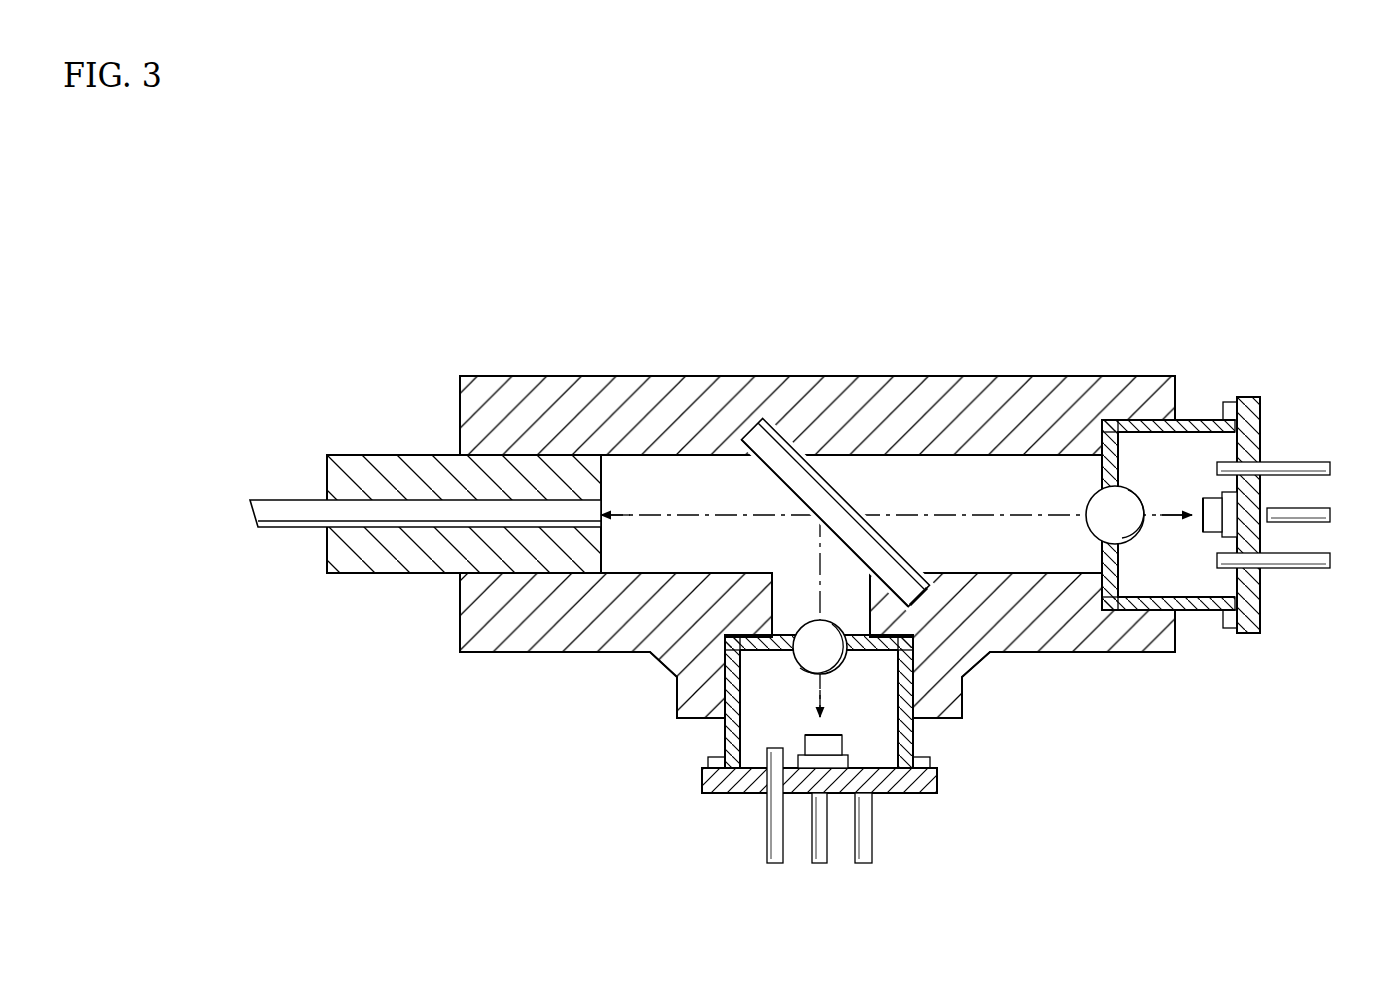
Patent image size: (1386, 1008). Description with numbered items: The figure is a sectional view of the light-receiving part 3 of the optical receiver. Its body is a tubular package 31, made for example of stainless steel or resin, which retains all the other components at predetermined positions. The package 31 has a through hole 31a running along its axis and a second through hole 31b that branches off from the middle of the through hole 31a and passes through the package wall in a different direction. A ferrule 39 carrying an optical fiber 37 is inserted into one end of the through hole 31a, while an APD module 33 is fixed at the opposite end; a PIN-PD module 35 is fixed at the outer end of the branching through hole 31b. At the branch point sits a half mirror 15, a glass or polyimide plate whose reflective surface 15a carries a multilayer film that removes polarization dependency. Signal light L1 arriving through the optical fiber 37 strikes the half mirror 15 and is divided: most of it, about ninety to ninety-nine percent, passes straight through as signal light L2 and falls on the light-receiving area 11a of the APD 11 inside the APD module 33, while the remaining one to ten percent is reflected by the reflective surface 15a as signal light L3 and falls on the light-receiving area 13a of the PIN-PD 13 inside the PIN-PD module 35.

The light-receiving part 3 is at (684, 268).
The package 31 is at (1020, 377).
The through hole 31a is at (656, 458).
The through hole 31b is at (787, 583).
The APD module 33 is at (1216, 454).
The PIN-PD module 35 is at (900, 741).
The optical fiber 37 is at (297, 527).
The ferrule 39 is at (392, 577).
The APD 11 is at (1180, 505).
The light-receiving area 11a is at (1203, 505).
The PIN-PD 13 is at (824, 716).
The light-receiving area 13a is at (818, 733).
The half mirror 15 is at (836, 513).
The reflective surface 15a is at (784, 478).
The signal light L1 is at (710, 501).
The signal light L2 is at (1006, 501).
The signal light L3 is at (841, 616).